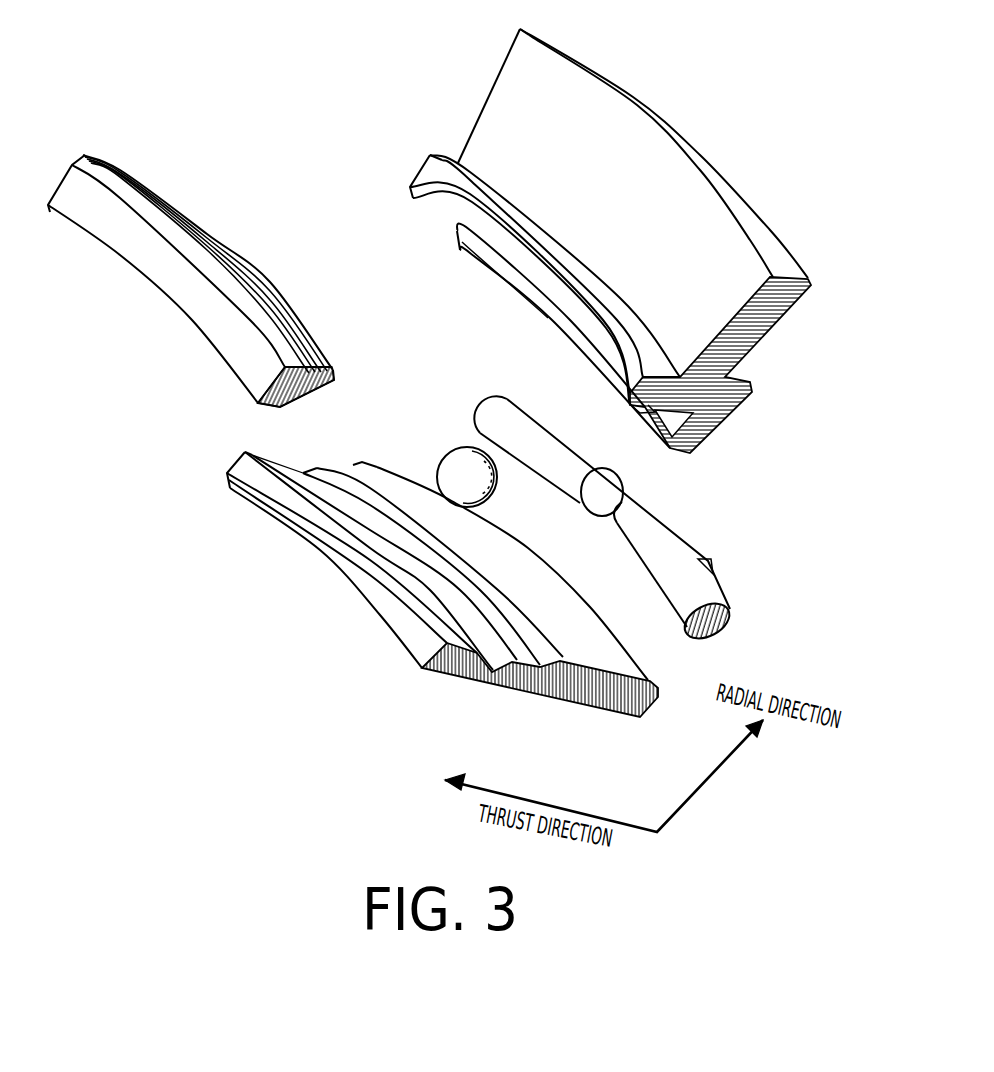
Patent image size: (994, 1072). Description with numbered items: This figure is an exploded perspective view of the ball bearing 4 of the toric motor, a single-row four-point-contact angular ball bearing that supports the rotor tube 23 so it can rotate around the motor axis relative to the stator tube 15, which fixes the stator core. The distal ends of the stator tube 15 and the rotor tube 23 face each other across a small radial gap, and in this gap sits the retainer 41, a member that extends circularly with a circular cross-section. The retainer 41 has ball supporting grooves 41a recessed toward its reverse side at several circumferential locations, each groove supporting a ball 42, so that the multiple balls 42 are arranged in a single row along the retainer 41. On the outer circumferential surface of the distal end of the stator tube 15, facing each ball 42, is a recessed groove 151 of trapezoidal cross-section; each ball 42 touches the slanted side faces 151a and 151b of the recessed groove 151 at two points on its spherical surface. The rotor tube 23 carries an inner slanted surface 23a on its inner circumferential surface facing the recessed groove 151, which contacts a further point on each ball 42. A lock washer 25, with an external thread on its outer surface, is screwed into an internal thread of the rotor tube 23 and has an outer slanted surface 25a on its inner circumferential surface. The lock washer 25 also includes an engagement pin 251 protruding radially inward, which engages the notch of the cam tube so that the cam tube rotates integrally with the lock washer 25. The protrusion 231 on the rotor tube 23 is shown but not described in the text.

The ball bearing 4 is at (687, 66).
The stator tube 15 is at (615, 712).
The recessed groove 151 is at (500, 660).
The slanted side face 151a is at (473, 670).
The slanted side face 151b is at (513, 672).
The rotor tube 23 is at (744, 338).
The protrusion 231 is at (637, 415).
The inner slanted surface 23a is at (666, 431).
The lock washer 25 is at (208, 322).
The engagement pin 251 is at (262, 287).
The outer slanted surface 25a is at (295, 393).
The retainer 41 is at (703, 597).
The ball supporting groove 41a is at (623, 506).
The ball 42 is at (455, 460).